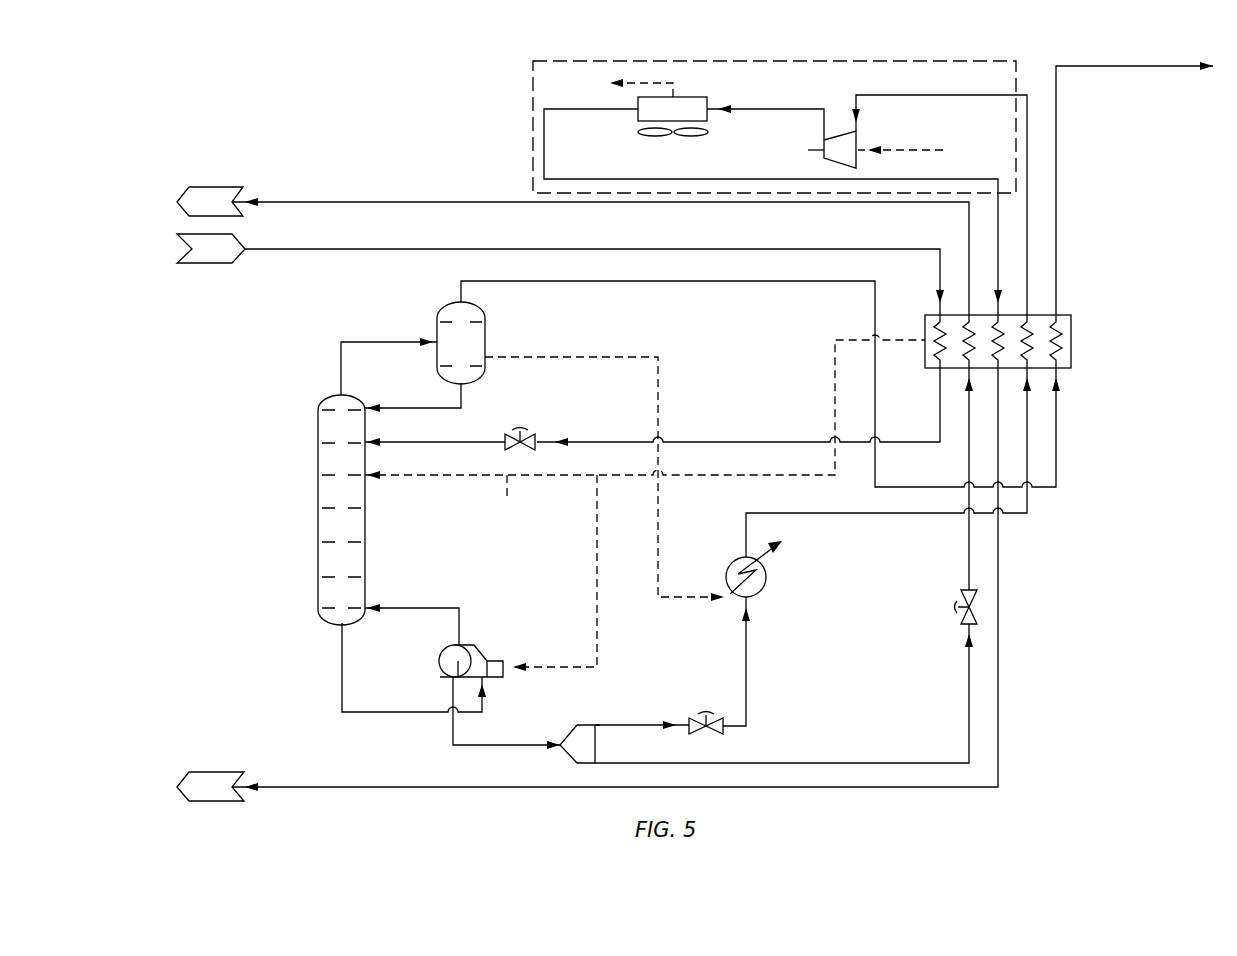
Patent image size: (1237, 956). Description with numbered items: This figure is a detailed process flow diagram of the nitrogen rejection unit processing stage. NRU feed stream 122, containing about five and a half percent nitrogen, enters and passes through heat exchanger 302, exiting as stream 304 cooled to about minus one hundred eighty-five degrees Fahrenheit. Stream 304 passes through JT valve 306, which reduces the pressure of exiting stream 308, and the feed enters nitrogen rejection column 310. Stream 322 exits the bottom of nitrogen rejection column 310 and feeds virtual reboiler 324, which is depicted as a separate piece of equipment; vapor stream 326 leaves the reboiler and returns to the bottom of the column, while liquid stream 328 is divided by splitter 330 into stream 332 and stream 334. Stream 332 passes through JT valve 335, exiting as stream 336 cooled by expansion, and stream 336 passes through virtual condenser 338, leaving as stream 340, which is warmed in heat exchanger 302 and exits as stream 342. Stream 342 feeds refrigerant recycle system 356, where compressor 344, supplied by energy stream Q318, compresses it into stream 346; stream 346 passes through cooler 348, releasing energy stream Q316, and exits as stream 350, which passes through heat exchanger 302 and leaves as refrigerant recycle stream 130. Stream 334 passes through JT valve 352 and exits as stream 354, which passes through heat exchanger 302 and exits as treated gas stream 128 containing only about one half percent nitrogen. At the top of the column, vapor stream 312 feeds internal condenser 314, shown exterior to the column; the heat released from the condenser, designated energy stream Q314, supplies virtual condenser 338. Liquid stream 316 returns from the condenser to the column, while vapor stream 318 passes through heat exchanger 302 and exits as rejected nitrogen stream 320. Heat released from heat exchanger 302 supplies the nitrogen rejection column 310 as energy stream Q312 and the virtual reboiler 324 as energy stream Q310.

The NRU feed stream 122 is at (205, 263).
The treated gas stream 128 is at (216, 187).
The refrigerant recycle stream 130 is at (415, 787).
The heat exchanger 302 is at (1071, 333).
The stream 304 is at (765, 442).
The JT valve 306 is at (530, 440).
The stream 308 is at (465, 442).
The nitrogen rejection column 310 is at (320, 510).
The vapor stream 312 is at (390, 342).
The internal condenser 314 is at (486, 340).
The liquid stream 316 is at (412, 408).
The vapor stream 318 is at (667, 281).
The rejected nitrogen stream 320 is at (1056, 140).
The stream 322 is at (392, 712).
The virtual reboiler 324 is at (478, 645).
The vapor stream 326 is at (415, 608).
The liquid stream 328 is at (507, 745).
The splitter 330 is at (577, 730).
The stream 332 is at (645, 724).
The stream 334 is at (853, 765).
The JT valve 335 is at (706, 712).
The stream 336 is at (746, 660).
The virtual condenser 338 is at (765, 582).
The stream 340 is at (855, 513).
The stream 342 is at (1027, 205).
The compressor 344 is at (832, 161).
The stream 346 is at (767, 109).
The cooler 348 is at (636, 123).
The stream 350 is at (998, 247).
The JT valve 352 is at (975, 612).
The stream 354 is at (969, 530).
The refrigerant recycle system 356 is at (527, 118).
The energy stream Q310 is at (597, 568).
The energy stream Q312 is at (507, 503).
The energy stream Q314 is at (575, 357).
The energy stream Q316 is at (676, 82).
The energy stream Q318 is at (905, 150).